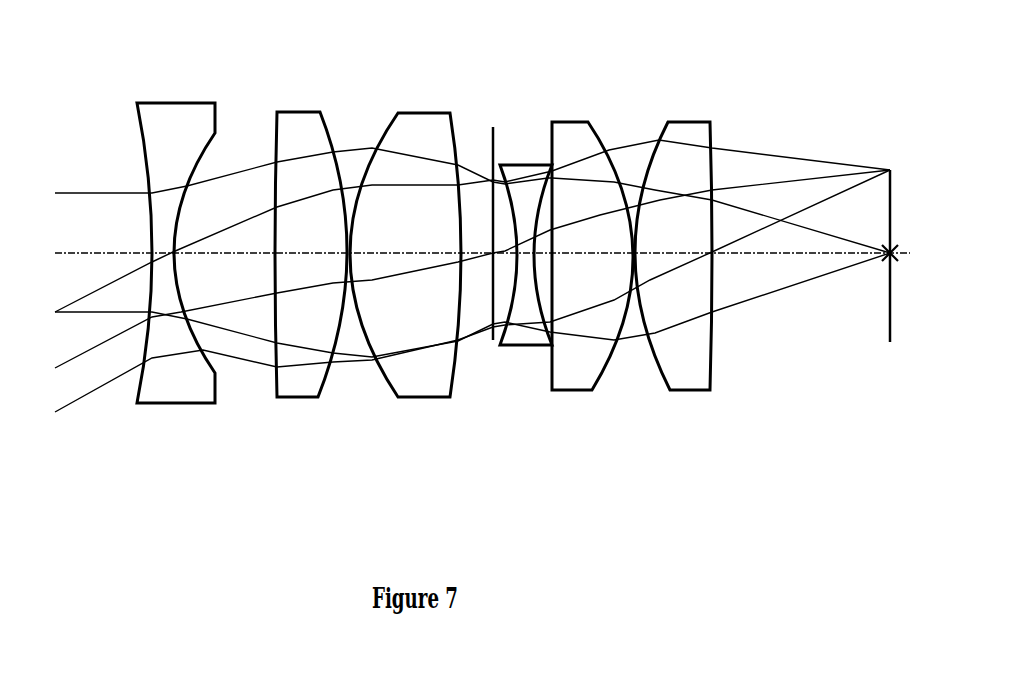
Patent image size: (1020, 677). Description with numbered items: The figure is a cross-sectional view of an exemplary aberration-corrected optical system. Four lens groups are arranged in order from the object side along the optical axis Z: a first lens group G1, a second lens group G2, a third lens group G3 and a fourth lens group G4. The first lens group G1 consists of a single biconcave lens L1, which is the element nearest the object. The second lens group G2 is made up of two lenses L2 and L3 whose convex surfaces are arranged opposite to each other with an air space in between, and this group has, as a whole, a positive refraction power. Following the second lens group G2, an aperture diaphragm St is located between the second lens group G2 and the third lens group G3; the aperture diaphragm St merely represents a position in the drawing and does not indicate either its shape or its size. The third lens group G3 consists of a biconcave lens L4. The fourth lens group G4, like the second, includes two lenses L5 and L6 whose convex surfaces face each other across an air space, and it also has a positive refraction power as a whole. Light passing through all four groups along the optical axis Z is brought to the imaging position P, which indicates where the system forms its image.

The biconcave lens L1 is at (177, 103).
The lens L2 is at (308, 112).
The lens L3 is at (405, 223).
The biconcave lens L4 is at (522, 165).
The lens L5 is at (583, 122).
The lens L6 is at (673, 220).
The first lens group G1 is at (176, 208).
The second lens group G2 is at (368, 205).
The third lens group G3 is at (525, 179).
The fourth lens group G4 is at (632, 202).
The aperture diaphragm St is at (493, 165).
The imaging position P is at (894, 257).
The optical axis Z is at (72, 251).